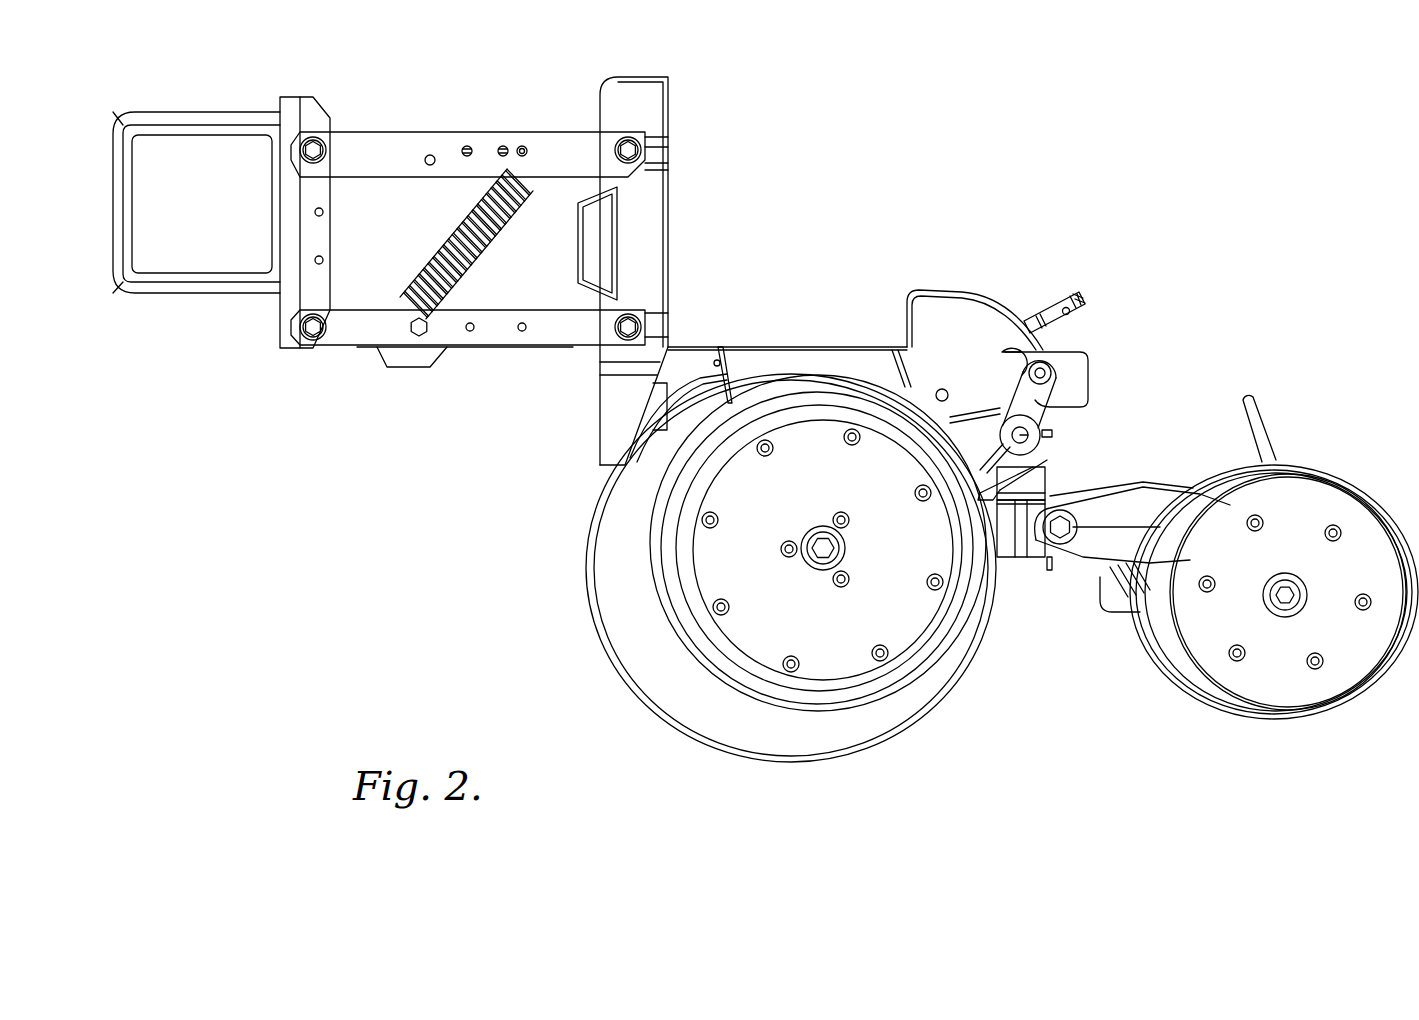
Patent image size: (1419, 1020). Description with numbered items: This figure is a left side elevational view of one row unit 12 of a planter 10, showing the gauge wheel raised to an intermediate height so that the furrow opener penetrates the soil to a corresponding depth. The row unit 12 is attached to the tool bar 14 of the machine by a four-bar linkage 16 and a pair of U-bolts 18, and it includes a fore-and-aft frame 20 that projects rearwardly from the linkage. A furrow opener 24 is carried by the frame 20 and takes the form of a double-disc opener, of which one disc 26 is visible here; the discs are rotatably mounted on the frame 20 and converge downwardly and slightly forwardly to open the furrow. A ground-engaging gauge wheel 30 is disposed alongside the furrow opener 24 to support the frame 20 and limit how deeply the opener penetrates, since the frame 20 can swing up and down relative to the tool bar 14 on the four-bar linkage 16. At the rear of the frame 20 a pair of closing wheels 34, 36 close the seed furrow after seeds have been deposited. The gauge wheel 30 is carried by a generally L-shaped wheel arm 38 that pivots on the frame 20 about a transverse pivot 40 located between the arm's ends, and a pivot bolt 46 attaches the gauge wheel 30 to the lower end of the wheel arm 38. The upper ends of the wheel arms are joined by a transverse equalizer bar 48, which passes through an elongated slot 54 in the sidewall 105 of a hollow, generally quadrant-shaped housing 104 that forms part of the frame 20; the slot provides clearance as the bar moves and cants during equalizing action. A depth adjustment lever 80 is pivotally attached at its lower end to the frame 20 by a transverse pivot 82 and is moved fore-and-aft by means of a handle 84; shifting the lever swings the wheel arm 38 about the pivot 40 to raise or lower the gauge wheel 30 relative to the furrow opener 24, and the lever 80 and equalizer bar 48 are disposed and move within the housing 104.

The planter 10 is at (472, 98).
The row unit 12 is at (578, 447).
The tool bar 14 is at (205, 143).
The four-bar linkage 16 is at (321, 364).
The U-bolts 18 is at (228, 120).
The fore-and-aft frame 20 is at (849, 338).
The furrow opener 24 is at (851, 760).
The disc 26 is at (705, 742).
The gauge wheel 30 is at (918, 645).
The closing wheel 34 is at (1340, 675).
The closing wheel 36 is at (1165, 680).
The wheel arm 38 is at (975, 450).
The pivot 40 is at (1042, 435).
The pivot bolt 46 is at (822, 552).
The equalizer bar 48 is at (1052, 373).
The elongated slot 54 is at (998, 360).
The depth adjustment lever 80 is at (1100, 322).
The pivot 82 is at (941, 389).
The handle 84 is at (1055, 310).
The housing 104 is at (951, 290).
The sidewall 105 is at (986, 318).